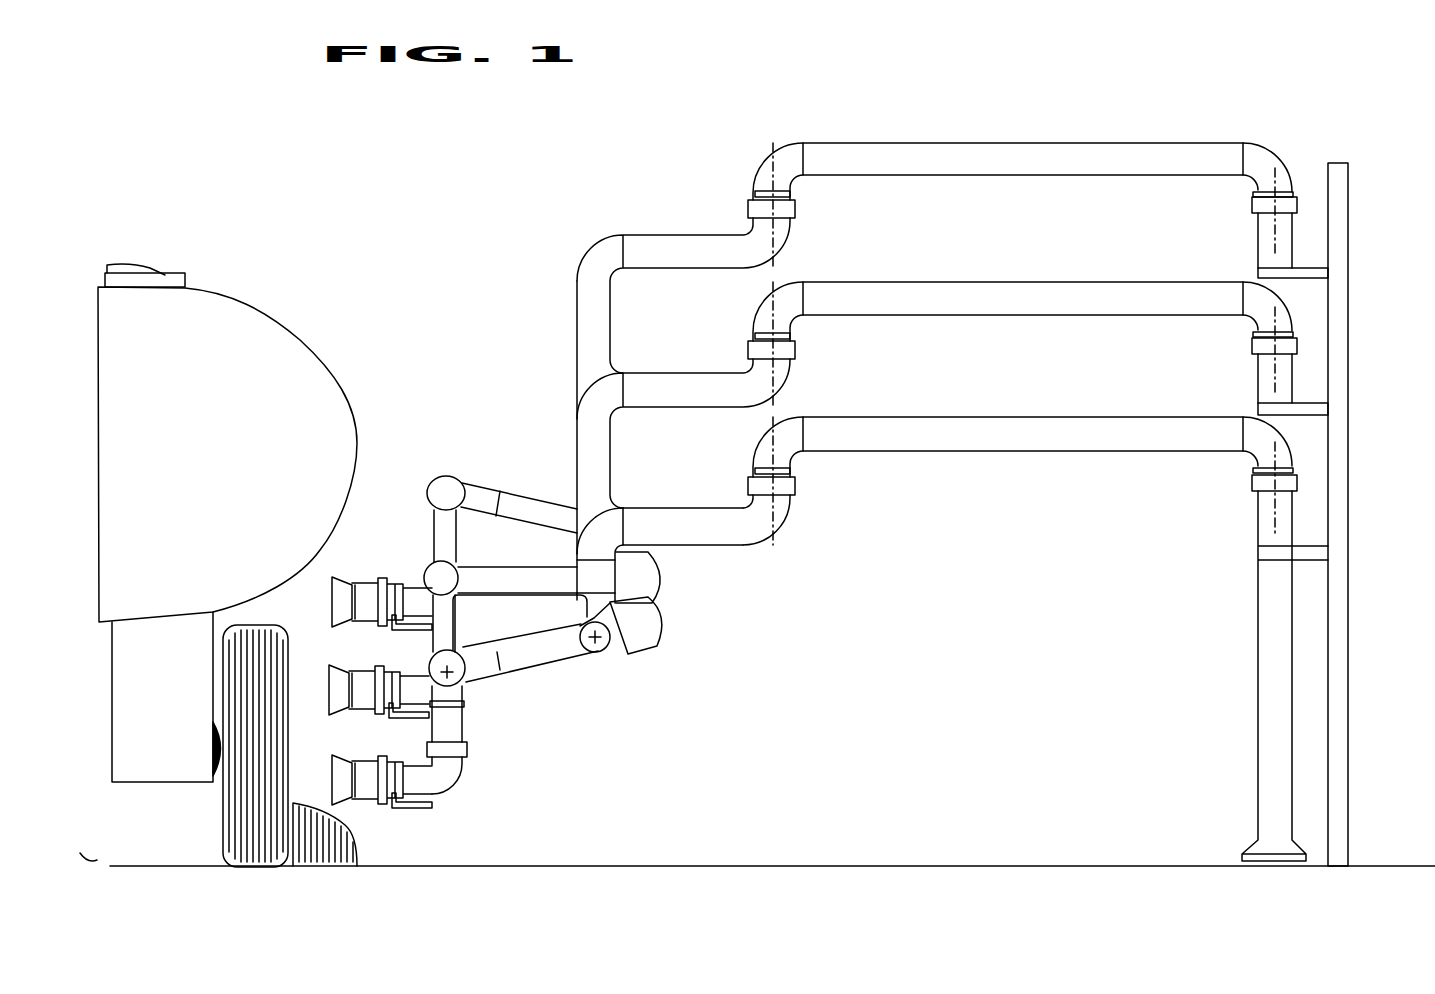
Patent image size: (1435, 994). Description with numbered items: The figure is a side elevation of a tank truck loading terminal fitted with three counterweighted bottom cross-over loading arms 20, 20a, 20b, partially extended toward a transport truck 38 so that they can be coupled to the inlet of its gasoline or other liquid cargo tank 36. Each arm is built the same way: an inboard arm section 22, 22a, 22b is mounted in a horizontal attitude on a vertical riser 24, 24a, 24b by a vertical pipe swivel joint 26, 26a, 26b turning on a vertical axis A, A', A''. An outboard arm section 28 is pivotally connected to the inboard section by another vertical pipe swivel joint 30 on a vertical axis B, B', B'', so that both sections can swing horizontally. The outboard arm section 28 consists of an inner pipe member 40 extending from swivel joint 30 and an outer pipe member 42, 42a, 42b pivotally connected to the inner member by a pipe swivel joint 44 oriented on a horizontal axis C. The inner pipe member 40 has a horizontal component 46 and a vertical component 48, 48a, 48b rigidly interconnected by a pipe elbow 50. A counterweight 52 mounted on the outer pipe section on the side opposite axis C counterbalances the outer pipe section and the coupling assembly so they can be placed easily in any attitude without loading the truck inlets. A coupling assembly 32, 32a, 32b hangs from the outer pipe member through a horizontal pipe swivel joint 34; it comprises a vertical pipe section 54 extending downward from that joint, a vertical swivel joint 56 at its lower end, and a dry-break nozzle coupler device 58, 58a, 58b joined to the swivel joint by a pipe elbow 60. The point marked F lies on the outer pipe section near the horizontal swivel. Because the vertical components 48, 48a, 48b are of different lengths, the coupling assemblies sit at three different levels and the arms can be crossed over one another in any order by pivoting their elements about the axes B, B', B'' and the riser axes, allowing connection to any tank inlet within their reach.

The bottom cross-over loading arm 20 is at (995, 460).
The bottom cross-over loading arm 20a is at (1018, 319).
The bottom cross-over loading arm 20b is at (1026, 181).
The inboard arm section 22 is at (1093, 455).
The inboard arm section 22a is at (1115, 318).
The inboard arm section 22b is at (1122, 178).
The vertical riser 24 is at (1258, 531).
The vertical riser 24a is at (1265, 394).
The vertical riser 24b is at (1258, 254).
The vertical pipe swivel joint 26 is at (1250, 484).
The vertical pipe swivel joint 26a is at (1250, 342).
The vertical pipe swivel joint 26b is at (1250, 202).
The outboard arm section 28 is at (655, 505).
The vertical pipe swivel joint 30 is at (795, 482).
The coupling assembly 32 is at (470, 778).
The coupling assembly 32a is at (372, 708).
The coupling assembly 32b is at (381, 582).
The horizontal pipe swivel joint 34 is at (464, 684).
The liquid cargo tank 36 is at (222, 398).
The transport truck 38 is at (238, 293).
The inner pipe member 40 is at (718, 547).
The outer pipe member 42 is at (556, 655).
The outer pipe member 42a is at (502, 577).
The outer pipe member 42b is at (522, 498).
The pipe swivel joint 44 is at (578, 624).
The horizontal component 46 is at (705, 514).
The vertical component 48 is at (600, 581).
The vertical component 48a is at (607, 428).
The vertical component 48b is at (607, 311).
The pipe elbow 50 is at (580, 545).
The counterweight 52 is at (662, 612).
The vertical pipe section 54 is at (466, 708).
The vertical swivel joint 56 is at (468, 748).
The coupler device 58 is at (362, 802).
The coupler device 58a is at (358, 672).
The coupler device 58b is at (335, 607).
The pipe elbow 60 is at (445, 794).
The vertical axis A is at (1239, 488).
The vertical axis A' is at (1231, 351).
The vertical axis A'' is at (1236, 211).
The vertical axis B is at (808, 481).
The vertical axis B' is at (796, 344).
The vertical axis B'' is at (800, 205).
The horizontal axis C is at (607, 650).
The pivot axis F is at (452, 666).